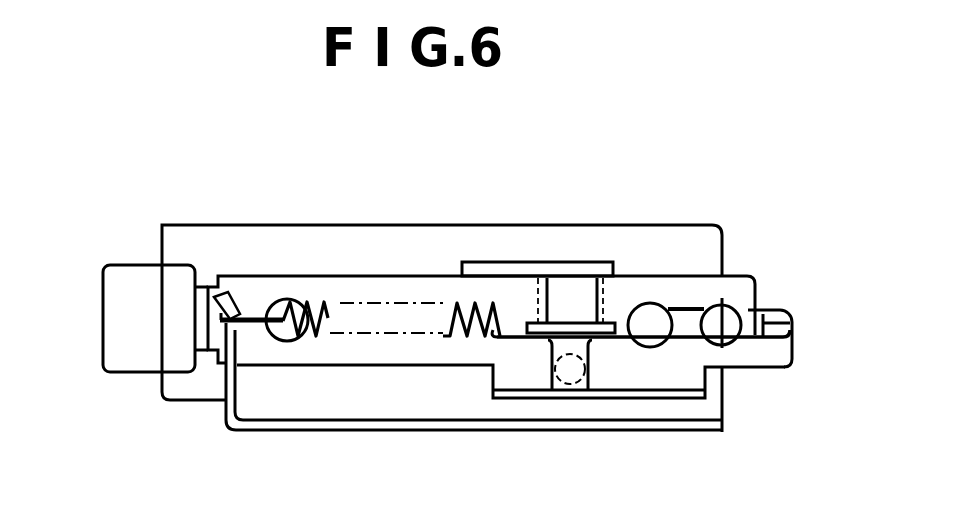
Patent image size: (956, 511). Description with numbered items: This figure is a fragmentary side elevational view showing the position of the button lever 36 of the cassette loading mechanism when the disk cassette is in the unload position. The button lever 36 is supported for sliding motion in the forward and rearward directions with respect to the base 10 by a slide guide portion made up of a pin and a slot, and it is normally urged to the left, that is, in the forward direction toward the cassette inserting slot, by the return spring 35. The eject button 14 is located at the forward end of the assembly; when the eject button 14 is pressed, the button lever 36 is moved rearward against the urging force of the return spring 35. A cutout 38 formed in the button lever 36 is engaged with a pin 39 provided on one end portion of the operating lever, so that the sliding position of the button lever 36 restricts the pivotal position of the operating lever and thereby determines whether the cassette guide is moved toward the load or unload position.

The base 10 is at (617, 227).
The eject button 14 is at (141, 293).
The return spring 35 is at (334, 313).
The button lever 36 is at (407, 288).
The cutout 38 is at (590, 341).
The pin 39 is at (570, 370).